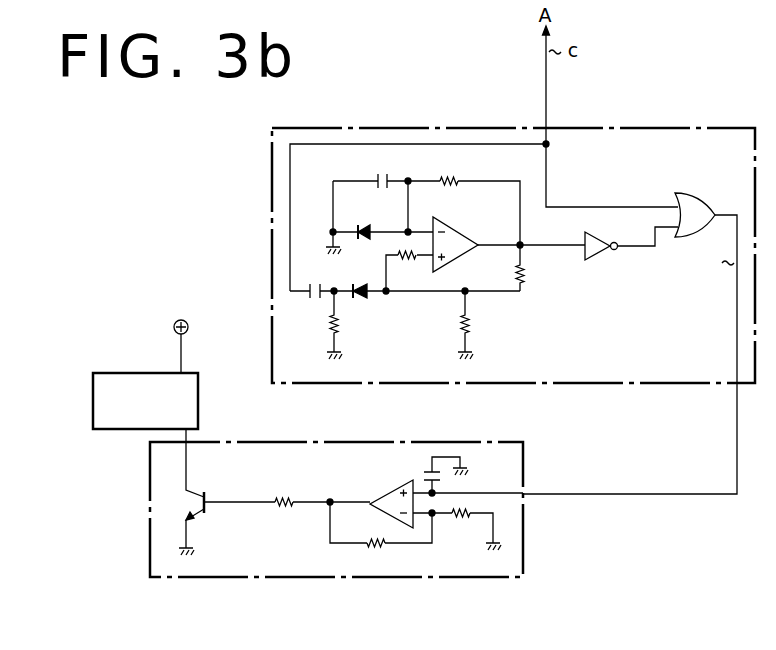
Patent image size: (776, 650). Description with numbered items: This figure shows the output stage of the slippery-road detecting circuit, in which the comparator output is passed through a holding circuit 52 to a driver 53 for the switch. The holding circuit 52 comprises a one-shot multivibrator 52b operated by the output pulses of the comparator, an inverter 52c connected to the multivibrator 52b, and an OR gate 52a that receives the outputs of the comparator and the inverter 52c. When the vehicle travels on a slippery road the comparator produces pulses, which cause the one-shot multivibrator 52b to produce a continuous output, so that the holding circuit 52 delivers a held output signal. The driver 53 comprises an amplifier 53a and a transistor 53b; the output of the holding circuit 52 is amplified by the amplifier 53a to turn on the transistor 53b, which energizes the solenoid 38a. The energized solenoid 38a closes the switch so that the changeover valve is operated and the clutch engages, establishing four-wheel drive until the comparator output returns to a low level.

The holding circuit 52 is at (628, 128).
The OR gate 52a is at (697, 194).
The one-shot multivibrator 52b is at (486, 300).
The inverter 52c is at (600, 253).
The driver 53 is at (332, 441).
The amplifier 53a is at (393, 490).
The transistor 53b is at (210, 508).
The solenoid 38a is at (203, 407).